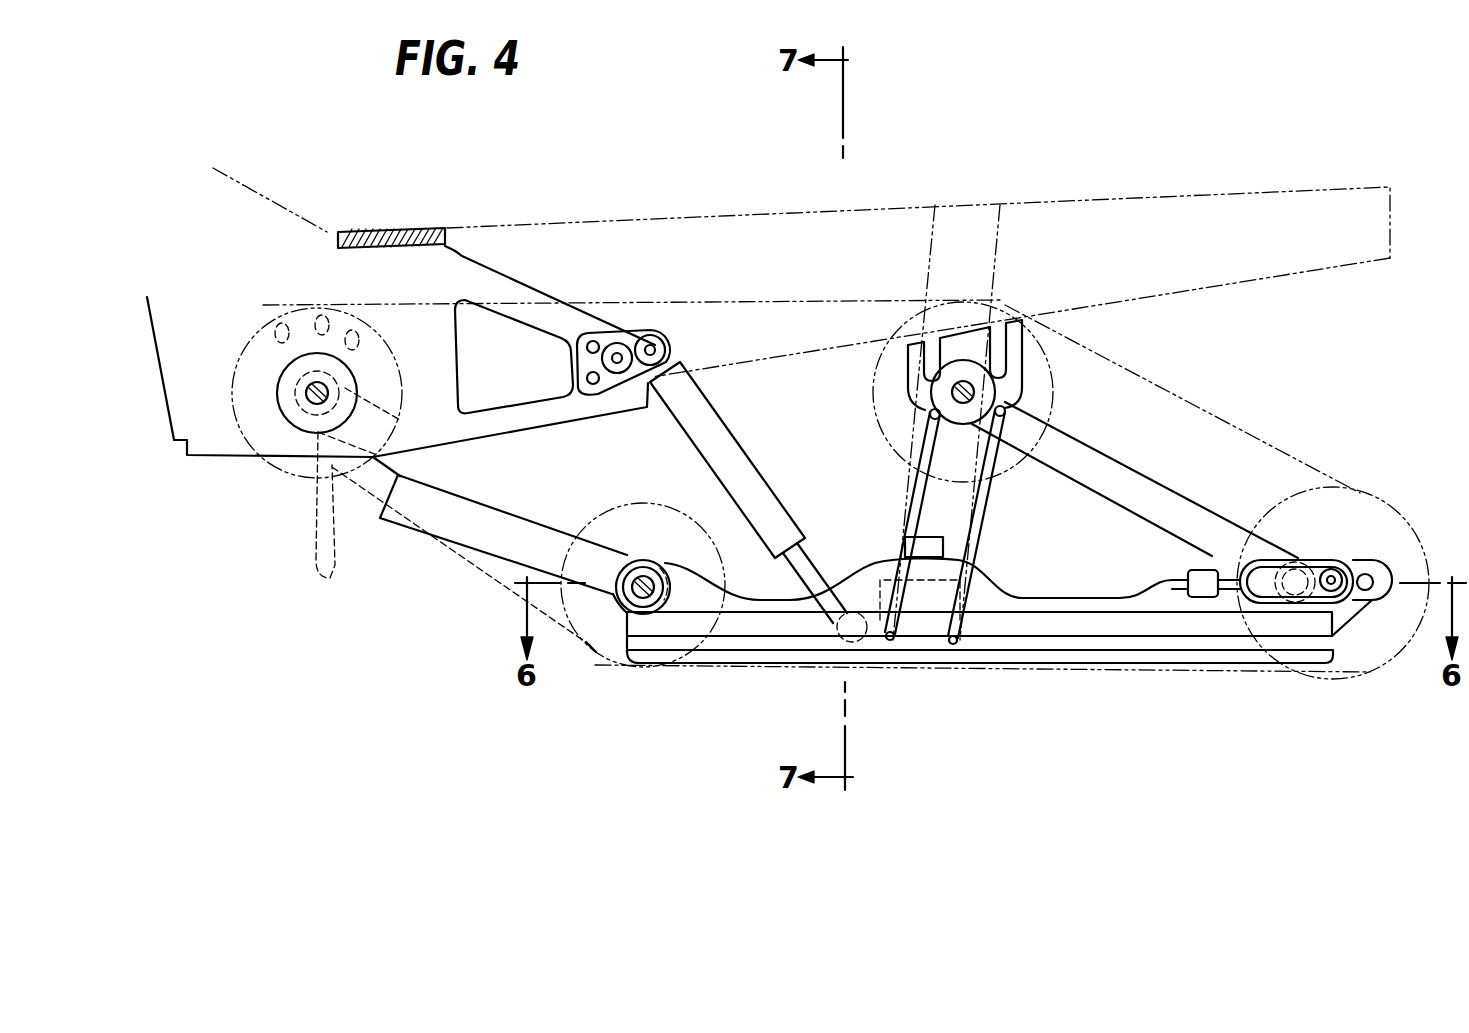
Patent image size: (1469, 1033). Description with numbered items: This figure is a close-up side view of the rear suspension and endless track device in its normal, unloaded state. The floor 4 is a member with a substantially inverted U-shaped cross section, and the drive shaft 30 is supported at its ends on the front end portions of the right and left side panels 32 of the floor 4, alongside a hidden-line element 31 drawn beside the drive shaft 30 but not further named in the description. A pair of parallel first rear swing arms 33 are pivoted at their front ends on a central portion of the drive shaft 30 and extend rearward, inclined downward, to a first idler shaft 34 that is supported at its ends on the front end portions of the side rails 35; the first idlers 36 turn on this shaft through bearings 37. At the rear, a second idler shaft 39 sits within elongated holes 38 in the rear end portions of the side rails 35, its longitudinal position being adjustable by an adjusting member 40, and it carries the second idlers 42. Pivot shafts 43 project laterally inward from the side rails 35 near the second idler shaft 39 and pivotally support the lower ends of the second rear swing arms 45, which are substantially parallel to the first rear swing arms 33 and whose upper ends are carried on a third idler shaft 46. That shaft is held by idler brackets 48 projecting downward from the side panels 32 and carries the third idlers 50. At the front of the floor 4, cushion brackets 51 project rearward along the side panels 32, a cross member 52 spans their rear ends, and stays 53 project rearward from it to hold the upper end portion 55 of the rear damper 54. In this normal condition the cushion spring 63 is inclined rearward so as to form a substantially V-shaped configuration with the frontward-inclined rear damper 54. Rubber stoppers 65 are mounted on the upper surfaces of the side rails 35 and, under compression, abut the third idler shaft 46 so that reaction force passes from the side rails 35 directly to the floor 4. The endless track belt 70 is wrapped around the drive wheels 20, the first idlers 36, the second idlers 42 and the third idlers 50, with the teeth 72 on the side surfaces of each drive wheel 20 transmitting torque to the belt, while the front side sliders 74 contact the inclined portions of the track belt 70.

The floor 4 is at (1188, 188).
The drive wheel 20 is at (263, 468).
The drive shaft 30 is at (318, 405).
The hidden strap 31 is at (322, 566).
The side panel 32 is at (1335, 263).
The first rear swing arm 33 is at (455, 488).
The first idler shaft 34 is at (643, 600).
The side rail 35 is at (752, 607).
The first idler 36 is at (642, 500).
The bearing 37 is at (613, 596).
The elongated hole 38 is at (1373, 604).
The second idler shaft 39 is at (1366, 576).
The adjusting member 40 is at (1208, 570).
The second idler 42 is at (1366, 490).
The pivot shaft 43 is at (1298, 560).
The second rear swing arm 45 is at (1148, 476).
The third idler shaft 46 is at (966, 386).
The idler bracket 48 is at (1024, 345).
The third idler 50 is at (1012, 468).
The cushion bracket 51 is at (522, 286).
The cross member 52 is at (618, 343).
The stay 53 is at (640, 340).
The rear damper 54 is at (735, 446).
The upper end portion 55 is at (656, 350).
The cushion spring 63 is at (983, 485).
The rubber stopper 65 is at (926, 540).
The endless track belt 70 is at (1165, 387).
The teeth 72 is at (263, 300).
The front side slider 74 is at (498, 556).